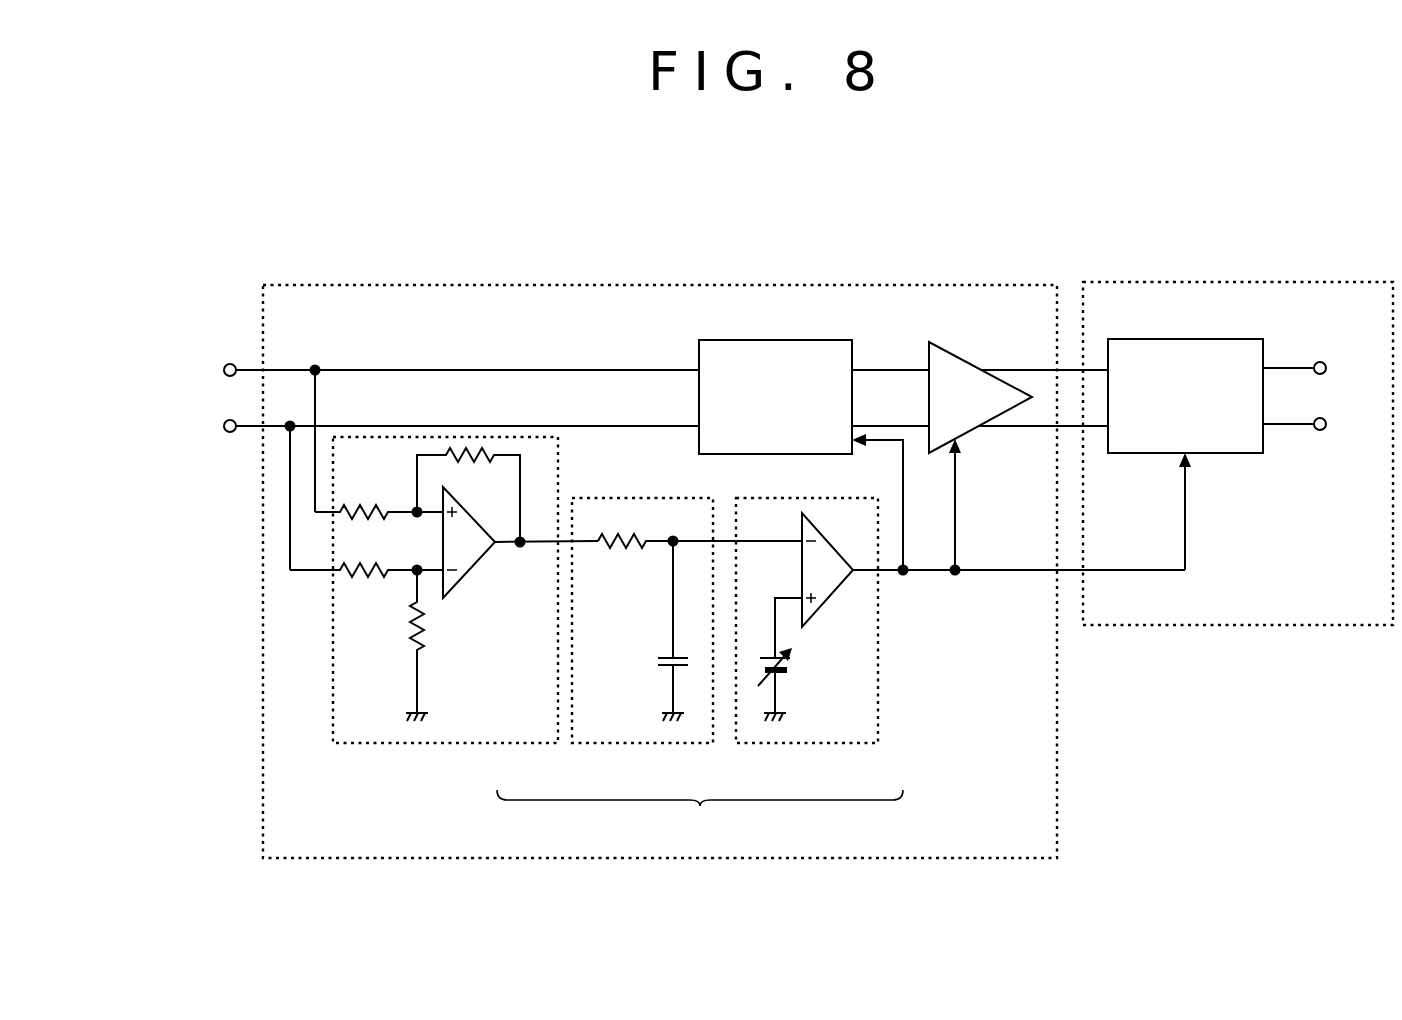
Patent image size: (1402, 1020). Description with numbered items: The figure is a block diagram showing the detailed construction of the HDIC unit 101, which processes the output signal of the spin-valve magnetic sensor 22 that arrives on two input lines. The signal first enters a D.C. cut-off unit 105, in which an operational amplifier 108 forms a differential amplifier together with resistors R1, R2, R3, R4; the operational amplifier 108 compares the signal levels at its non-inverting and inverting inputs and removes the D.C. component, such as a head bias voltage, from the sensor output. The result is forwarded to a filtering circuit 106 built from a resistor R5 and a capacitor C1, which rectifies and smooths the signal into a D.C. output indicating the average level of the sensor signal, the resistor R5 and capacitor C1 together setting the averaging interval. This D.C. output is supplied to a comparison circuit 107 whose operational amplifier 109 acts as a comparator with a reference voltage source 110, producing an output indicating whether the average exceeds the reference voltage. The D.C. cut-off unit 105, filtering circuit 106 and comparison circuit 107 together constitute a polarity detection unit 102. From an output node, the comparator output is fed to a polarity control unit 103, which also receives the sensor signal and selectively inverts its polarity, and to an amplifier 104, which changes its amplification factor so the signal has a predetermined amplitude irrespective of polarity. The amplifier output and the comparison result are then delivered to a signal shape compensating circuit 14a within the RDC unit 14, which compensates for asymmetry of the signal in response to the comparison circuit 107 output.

The HDIC unit 101 is at (660, 549).
The polarity detection unit 102 is at (700, 818).
The polarity control unit 103 is at (775, 377).
The amplifier 104 is at (980, 390).
The D.C. cut-off unit 105 is at (442, 577).
The filtering circuit 106 is at (687, 643).
The comparison circuit 107 is at (807, 643).
The operational amplifier 108 is at (520, 550).
The operational amplifier 109 is at (1021, 538).
The reference voltage source 110 is at (805, 617).
The RDC unit 14 is at (1238, 432).
The signal shape compensating circuit 14a is at (1217, 375).
The spin-valve magnetic sensor 22 is at (159, 381).
The resistor R1 is at (366, 497).
The resistor R2 is at (366, 588).
The resistor R3 is at (404, 645).
The resistor R4 is at (468, 495).
The resistor R5 is at (700, 560).
The capacitor C1 is at (655, 631).